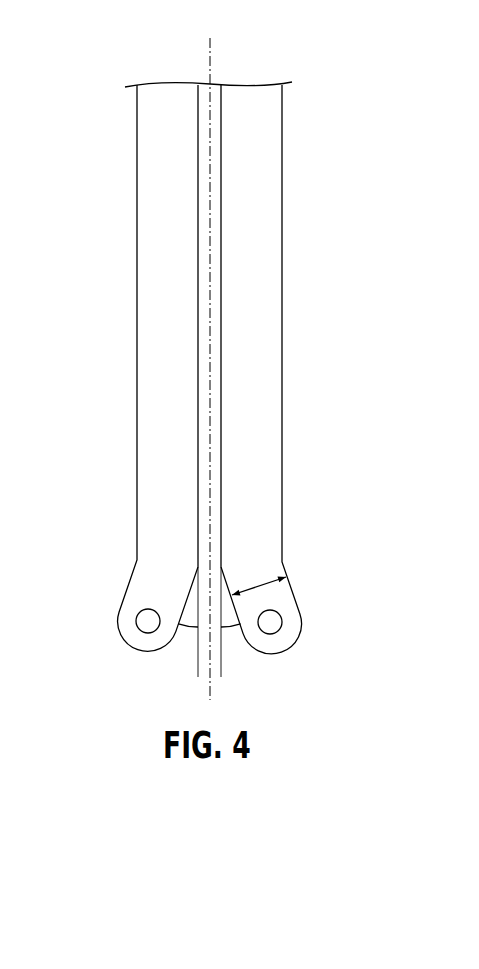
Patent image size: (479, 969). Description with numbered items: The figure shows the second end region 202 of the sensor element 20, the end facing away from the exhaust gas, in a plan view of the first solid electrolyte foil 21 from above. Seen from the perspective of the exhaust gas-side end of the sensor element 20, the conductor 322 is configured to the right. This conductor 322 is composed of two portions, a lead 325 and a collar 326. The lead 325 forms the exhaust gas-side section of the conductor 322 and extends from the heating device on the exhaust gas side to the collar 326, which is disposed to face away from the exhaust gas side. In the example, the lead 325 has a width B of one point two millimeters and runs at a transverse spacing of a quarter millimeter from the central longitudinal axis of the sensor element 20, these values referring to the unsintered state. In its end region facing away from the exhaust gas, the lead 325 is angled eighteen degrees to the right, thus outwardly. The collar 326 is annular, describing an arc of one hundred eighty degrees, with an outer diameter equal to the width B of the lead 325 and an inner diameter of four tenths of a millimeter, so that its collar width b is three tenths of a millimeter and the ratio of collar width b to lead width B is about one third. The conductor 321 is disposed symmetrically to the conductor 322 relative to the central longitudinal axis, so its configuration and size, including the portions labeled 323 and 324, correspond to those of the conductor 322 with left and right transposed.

The sensor element 20 is at (256, 369).
The first solid electrolyte foil 21 is at (256, 369).
The second end region 202 is at (312, 601).
The conductor 321 is at (120, 368).
The first leg portion 323 is at (148, 293).
The conductor 322 is at (321, 369).
The lead 325 is at (273, 285).
The first hole 324 is at (128, 622).
The collar 326 is at (288, 635).
The width of lead B is at (270, 579).
The collar width b is at (286, 611).